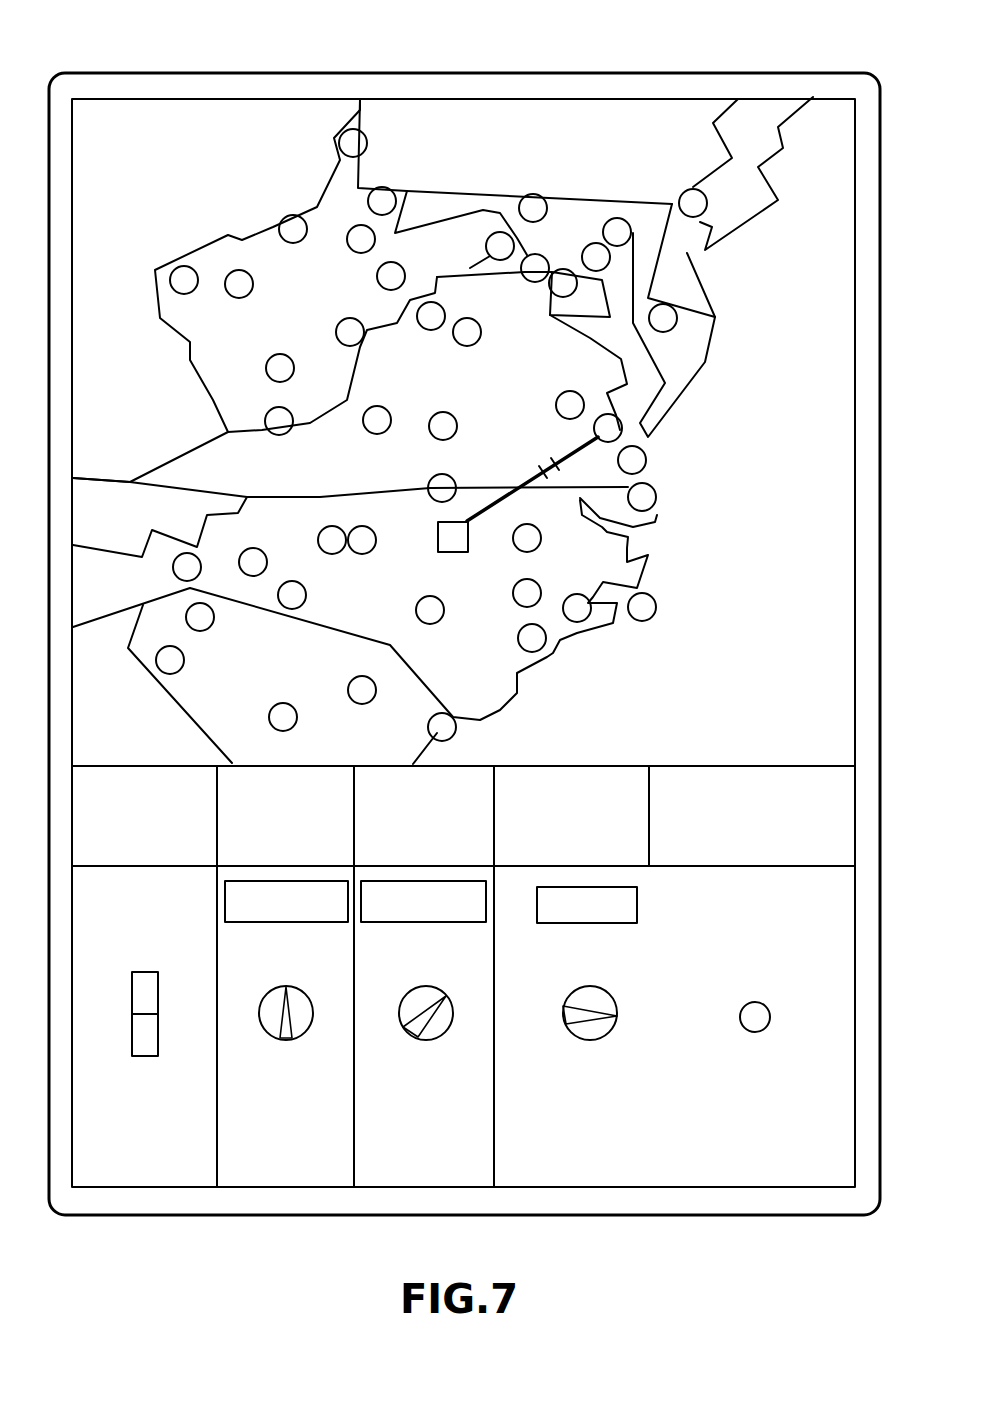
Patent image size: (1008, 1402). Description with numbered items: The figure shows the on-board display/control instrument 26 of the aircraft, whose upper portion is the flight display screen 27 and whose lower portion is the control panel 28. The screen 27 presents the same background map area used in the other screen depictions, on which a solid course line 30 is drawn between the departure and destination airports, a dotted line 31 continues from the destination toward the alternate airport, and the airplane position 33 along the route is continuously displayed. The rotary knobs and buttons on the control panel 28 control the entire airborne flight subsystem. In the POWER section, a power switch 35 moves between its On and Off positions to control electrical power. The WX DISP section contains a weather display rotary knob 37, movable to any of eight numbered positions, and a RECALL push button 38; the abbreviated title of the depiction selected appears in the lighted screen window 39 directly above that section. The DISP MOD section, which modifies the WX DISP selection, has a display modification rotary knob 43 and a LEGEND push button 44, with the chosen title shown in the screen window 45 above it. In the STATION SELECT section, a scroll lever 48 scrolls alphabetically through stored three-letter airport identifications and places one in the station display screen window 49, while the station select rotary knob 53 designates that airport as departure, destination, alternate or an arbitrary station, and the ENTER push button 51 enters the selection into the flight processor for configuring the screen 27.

The display/control instrument 26 is at (234, 62).
The flight display screen 27 is at (688, 120).
The control panel 28 is at (769, 1168).
The solid course line 30 is at (565, 442).
The dotted line 31 is at (469, 535).
The airplane position 33 is at (560, 464).
The power switch 35 is at (158, 1012).
The weather display rotary knob 37 is at (276, 1042).
The RECALL push button 38 is at (274, 922).
The screen window 39 is at (272, 828).
The display modification rotary knob 43 is at (432, 1040).
The LEGEND push button 44 is at (424, 922).
The screen window 45 is at (401, 828).
The scroll lever 48 is at (740, 1015).
The station display screen window 49 is at (553, 832).
The ENTER push button 51 is at (640, 917).
The station select rotary knob 53 is at (612, 1000).